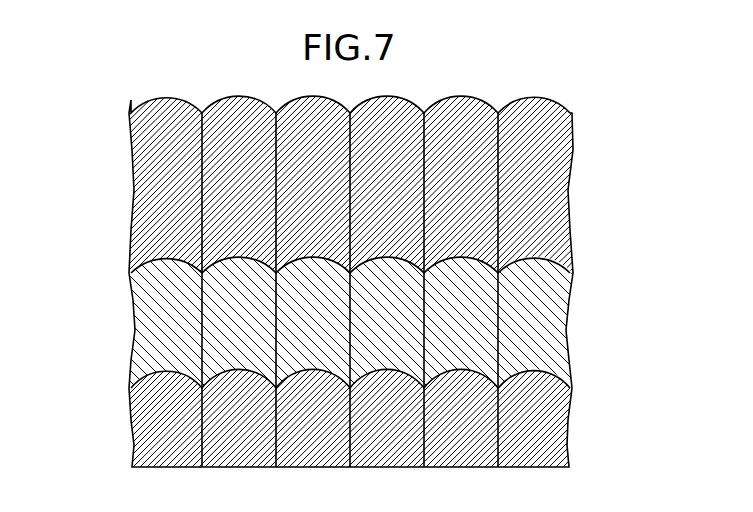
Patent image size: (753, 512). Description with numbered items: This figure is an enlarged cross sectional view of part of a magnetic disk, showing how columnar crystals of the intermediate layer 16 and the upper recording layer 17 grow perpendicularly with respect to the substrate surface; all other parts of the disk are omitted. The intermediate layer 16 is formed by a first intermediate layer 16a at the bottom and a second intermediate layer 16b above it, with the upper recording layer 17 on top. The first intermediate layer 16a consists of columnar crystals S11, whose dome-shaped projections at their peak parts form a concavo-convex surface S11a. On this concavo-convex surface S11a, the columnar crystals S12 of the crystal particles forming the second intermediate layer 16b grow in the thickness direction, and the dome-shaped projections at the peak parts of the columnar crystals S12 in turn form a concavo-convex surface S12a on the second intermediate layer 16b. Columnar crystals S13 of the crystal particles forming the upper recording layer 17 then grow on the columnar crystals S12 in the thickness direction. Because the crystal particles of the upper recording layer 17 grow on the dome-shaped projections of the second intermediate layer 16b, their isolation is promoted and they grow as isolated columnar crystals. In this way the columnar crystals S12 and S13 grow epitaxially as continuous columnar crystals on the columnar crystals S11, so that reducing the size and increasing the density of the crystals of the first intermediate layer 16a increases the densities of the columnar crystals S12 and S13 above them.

The upper recording layer 17 is at (343, 183).
The columnar crystals of the upper recording layer S13 is at (222, 173).
The intermediate layer 16 is at (373, 361).
The second intermediate layer 16b is at (350, 322).
The first intermediate layer 16a is at (350, 416).
The columnar crystals of the second intermediate layer S12 is at (222, 313).
The columnar crystals of the first intermediate layer S11 is at (222, 420).
The concavo-convex surface of the second intermediate layer S12a is at (236, 257).
The concavo-convex surface of the first intermediate layer S11a is at (238, 366).